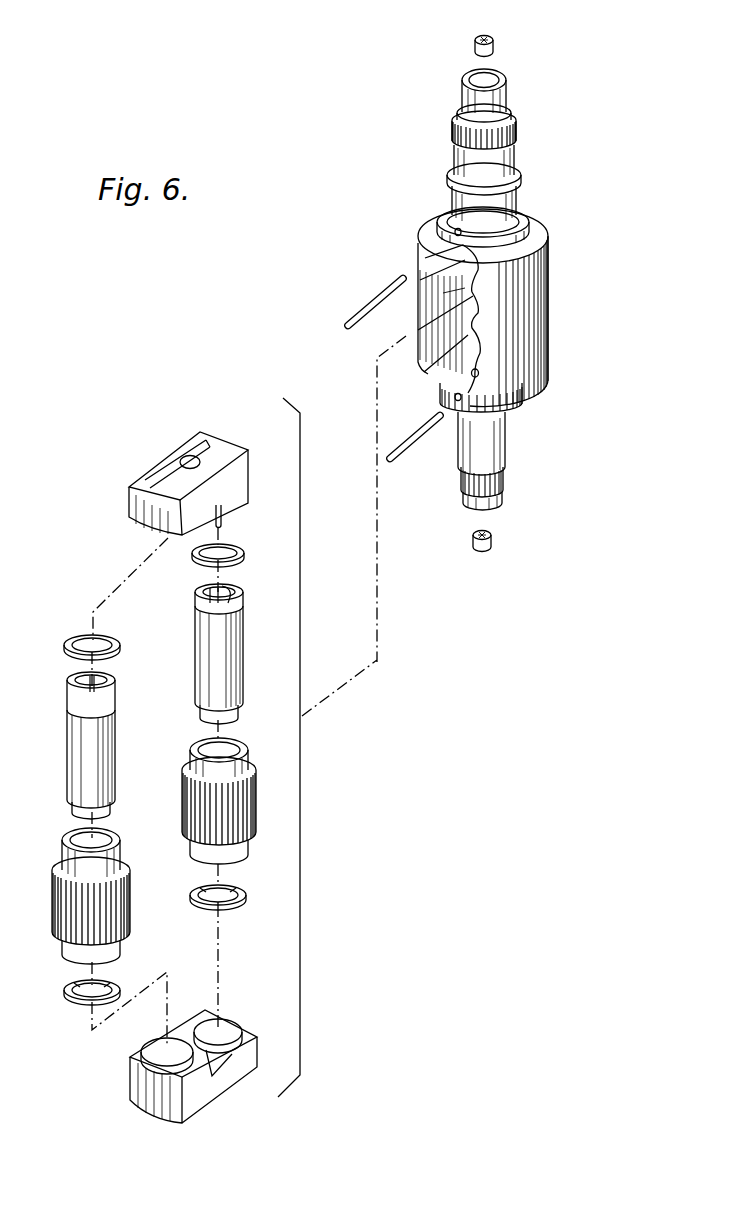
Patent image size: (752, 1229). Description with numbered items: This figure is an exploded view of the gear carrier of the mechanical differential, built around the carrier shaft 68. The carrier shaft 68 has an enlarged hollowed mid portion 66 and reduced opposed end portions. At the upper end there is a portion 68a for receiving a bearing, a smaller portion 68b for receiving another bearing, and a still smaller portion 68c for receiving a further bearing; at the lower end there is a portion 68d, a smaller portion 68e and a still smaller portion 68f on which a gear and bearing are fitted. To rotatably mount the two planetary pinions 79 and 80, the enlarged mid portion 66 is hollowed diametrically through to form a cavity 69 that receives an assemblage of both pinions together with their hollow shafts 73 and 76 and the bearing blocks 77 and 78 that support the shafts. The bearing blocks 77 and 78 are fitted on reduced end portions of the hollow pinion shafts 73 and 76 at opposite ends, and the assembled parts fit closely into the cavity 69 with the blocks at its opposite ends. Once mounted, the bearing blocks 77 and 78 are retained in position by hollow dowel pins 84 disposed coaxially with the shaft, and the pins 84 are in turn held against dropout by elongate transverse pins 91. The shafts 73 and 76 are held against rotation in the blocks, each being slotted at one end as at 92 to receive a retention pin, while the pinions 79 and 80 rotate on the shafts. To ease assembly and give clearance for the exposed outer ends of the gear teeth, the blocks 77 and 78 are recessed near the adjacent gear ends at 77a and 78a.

The enlarged hollowed mid portion 66 is at (562, 346).
The carrier shaft 68 is at (500, 289).
The bearing-receiving portion 68a is at (526, 212).
The smaller bearing-receiving portion 68b is at (514, 159).
The still smaller bearing-receiving portion 68c is at (500, 98).
The bearing-receiving portion 68d is at (527, 404).
The smaller bearing-receiving portion 68e is at (502, 446).
The still smaller end portion 68f is at (506, 494).
The cavity 69 is at (444, 339).
The hollow pinion shaft 73 is at (235, 650).
The hollow pinion shaft 76 is at (80, 744).
The bearing block 77 is at (243, 484).
The recess 77a is at (226, 527).
The bearing block 78 is at (203, 1056).
The recess 78a is at (243, 1030).
The planetary pinion 79 is at (242, 813).
The planetary pinion 80 is at (64, 910).
The hollow dowel pin 84 is at (512, 543).
The elongate transverse pin 91 is at (410, 442).
The slot 92 is at (84, 672).